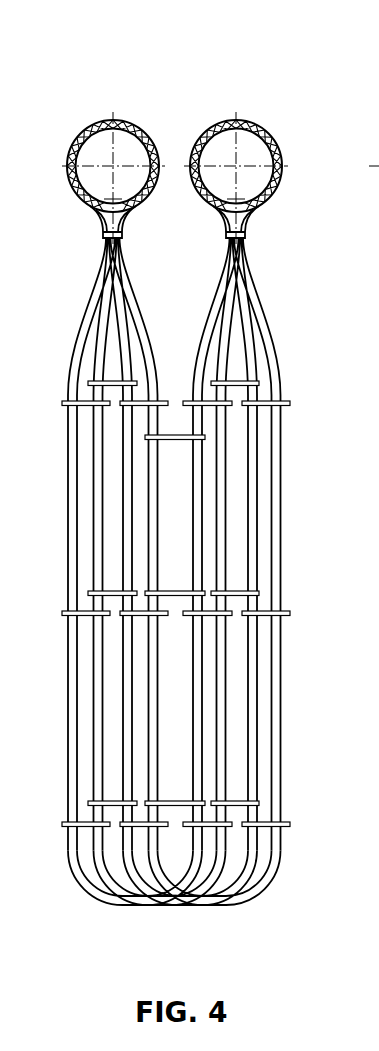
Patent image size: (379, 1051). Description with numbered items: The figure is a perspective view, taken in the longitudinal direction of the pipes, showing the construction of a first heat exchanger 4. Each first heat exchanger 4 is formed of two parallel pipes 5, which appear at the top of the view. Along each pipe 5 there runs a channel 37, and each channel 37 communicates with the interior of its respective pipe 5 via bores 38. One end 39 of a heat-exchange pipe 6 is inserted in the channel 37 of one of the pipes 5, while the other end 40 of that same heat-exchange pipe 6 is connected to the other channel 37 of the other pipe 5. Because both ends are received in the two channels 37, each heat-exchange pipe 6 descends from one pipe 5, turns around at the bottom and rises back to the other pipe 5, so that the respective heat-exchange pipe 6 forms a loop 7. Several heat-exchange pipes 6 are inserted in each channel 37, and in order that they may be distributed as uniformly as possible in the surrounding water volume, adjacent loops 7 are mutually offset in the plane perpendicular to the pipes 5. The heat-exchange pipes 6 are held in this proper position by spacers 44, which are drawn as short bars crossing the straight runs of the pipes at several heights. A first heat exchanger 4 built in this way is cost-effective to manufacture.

The first heat exchanger 4 is at (93, 100).
The pipe 5 is at (132, 125).
The bore 38 is at (110, 203).
The channel 37 is at (103, 222).
The end of heat-exchange pipe 39 is at (98, 288).
The other end of heat-exchange pipe 40 is at (225, 290).
The heat-exchange pipe 6 is at (73, 568).
The loop 7 is at (77, 888).
The spacer 44 is at (262, 403).